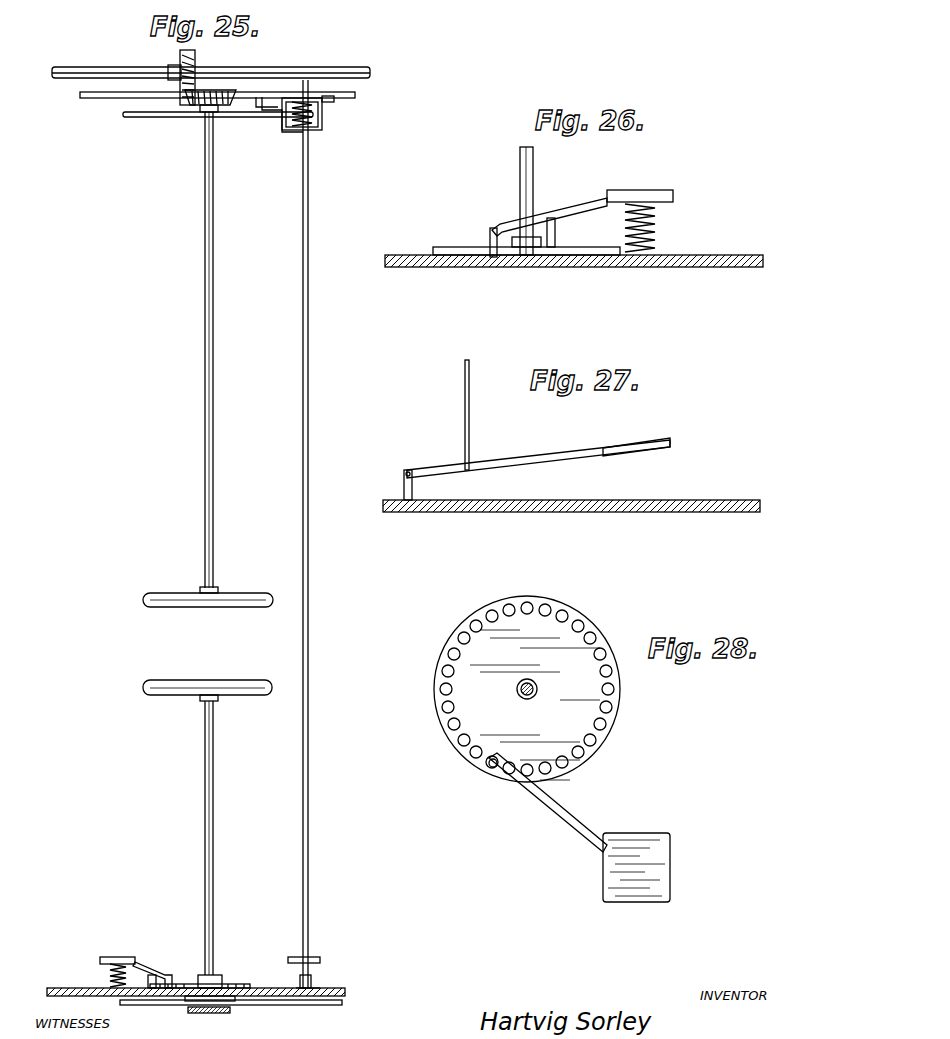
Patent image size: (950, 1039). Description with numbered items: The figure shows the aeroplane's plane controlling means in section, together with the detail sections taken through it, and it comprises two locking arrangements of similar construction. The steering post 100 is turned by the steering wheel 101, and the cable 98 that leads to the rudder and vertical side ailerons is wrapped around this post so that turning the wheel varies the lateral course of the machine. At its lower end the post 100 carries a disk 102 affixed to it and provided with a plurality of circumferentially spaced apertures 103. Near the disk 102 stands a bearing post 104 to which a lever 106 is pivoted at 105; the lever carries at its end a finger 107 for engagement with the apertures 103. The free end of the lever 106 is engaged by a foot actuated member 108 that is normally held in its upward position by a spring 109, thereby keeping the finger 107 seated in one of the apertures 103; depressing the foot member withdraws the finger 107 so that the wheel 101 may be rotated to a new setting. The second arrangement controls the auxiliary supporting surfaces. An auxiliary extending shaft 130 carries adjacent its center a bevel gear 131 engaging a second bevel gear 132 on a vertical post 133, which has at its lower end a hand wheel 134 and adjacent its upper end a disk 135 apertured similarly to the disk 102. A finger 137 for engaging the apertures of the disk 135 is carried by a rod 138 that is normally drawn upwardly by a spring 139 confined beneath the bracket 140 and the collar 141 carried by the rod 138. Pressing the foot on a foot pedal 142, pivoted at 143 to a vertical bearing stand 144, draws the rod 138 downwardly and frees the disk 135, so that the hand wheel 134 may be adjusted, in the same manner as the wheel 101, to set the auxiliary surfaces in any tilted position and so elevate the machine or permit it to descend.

In FIG. 25, the auxiliary extending shaft 130 is at (98, 68).
In FIG. 25, the bevel gear 131 is at (178, 65).
In FIG. 25, the second bevel gear 132 is at (198, 104).
In FIG. 25, the vertical post 133 is at (214, 420).
In FIG. 25, the hand wheel 134 is at (236, 610).
In FIG. 25, the disk 135 is at (148, 118).
In FIG. 25, the finger 137 is at (282, 122).
In FIG. 25, the rod 138 is at (309, 315).
In FIG. 27, the rod 138 is at (470, 418).
In FIG. 25, the spring 139 is at (318, 115).
In FIG. 25, the bracket 140 is at (310, 128).
In FIG. 25, the collar 141 is at (318, 96).
In FIG. 25, the foot pedal 142 is at (320, 960).
In FIG. 27, the foot pedal 142 is at (672, 442).
In FIG. 25, the pivot 143 is at (312, 978).
In FIG. 27, the pivot 143 is at (414, 487).
In FIG. 25, the vertical bearing stand 144 is at (318, 988).
In FIG. 27, the vertical bearing stand 144 is at (402, 497).
In FIG. 25, the post 100 is at (214, 826).
In FIG. 26, the post 100 is at (534, 188).
In FIG. 28, the post 100 is at (517, 694).
In FIG. 25, the steering wheel 101 is at (218, 684).
In FIG. 25, the disk 102 is at (232, 986).
In FIG. 26, the disk 102 is at (433, 248).
In FIG. 28, the disk 102 is at (592, 613).
In FIG. 28, the apertures 103 is at (618, 735).
In FIG. 26, the bearing post 104 is at (542, 268).
In FIG. 25, the pivot 105 is at (158, 980).
In FIG. 26, the pivot 105 is at (555, 218).
In FIG. 25, the lever 106 is at (145, 962).
In FIG. 26, the lever 106 is at (578, 210).
In FIG. 28, the lever 106 is at (570, 830).
In FIG. 25, the finger 107 is at (212, 940).
In FIG. 26, the finger 107 is at (488, 236).
In FIG. 28, the finger 107 is at (486, 775).
In FIG. 25, the foot actuated member 108 is at (100, 960).
In FIG. 26, the foot actuated member 108 is at (640, 192).
In FIG. 28, the foot actuated member 108 is at (660, 876).
In FIG. 25, the spring 109 is at (110, 976).
In FIG. 26, the spring 109 is at (658, 228).
In FIG. 25, the cable 98 is at (150, 1008).